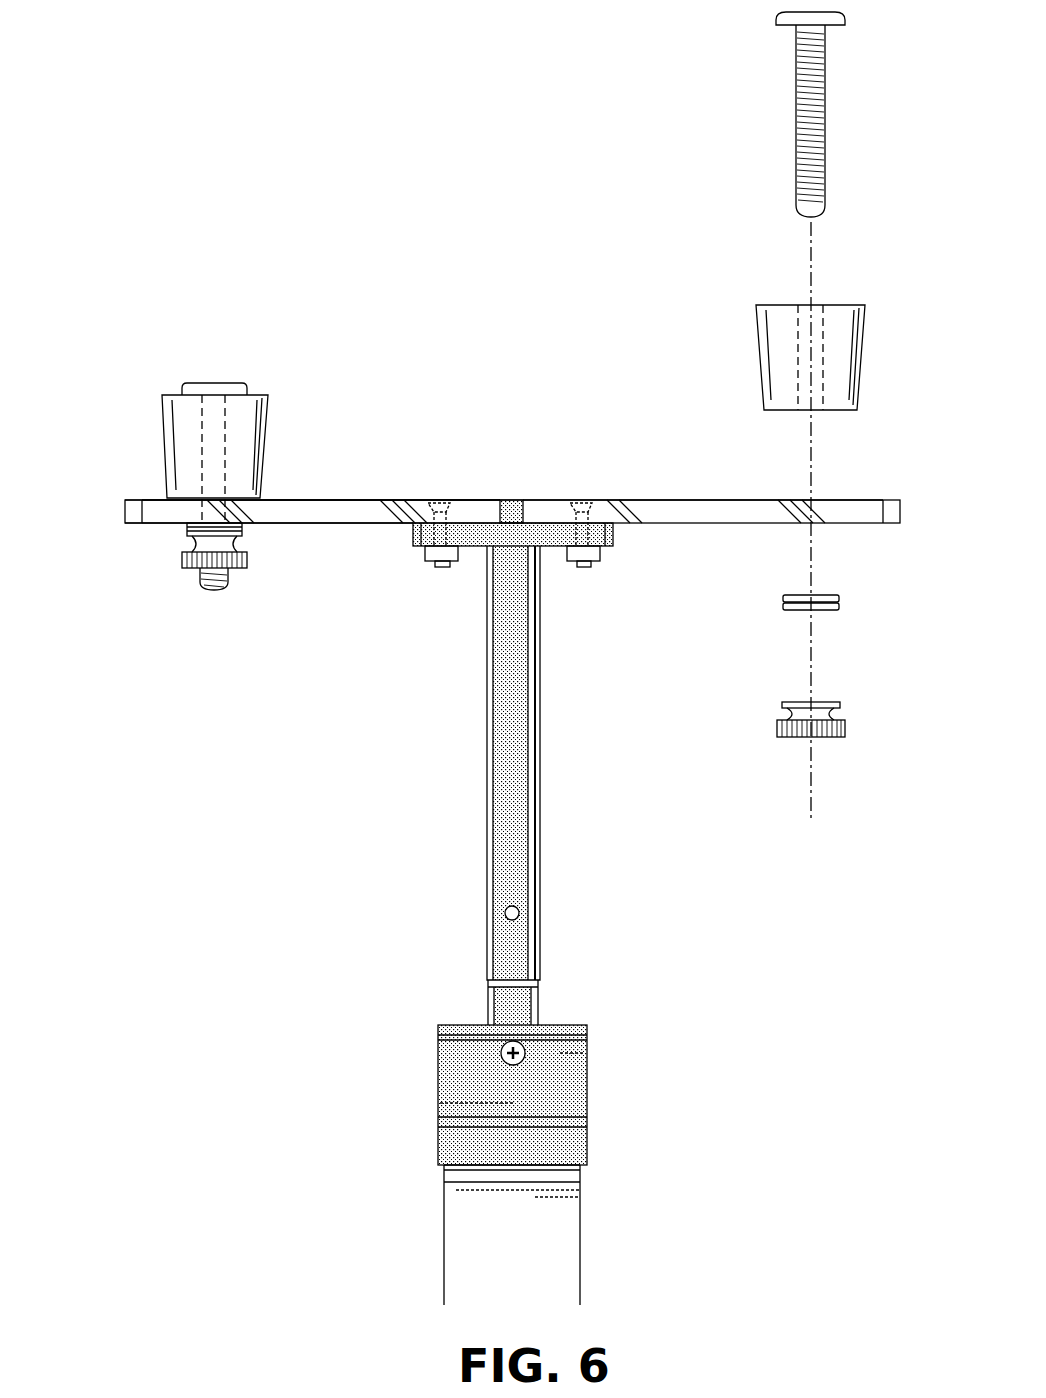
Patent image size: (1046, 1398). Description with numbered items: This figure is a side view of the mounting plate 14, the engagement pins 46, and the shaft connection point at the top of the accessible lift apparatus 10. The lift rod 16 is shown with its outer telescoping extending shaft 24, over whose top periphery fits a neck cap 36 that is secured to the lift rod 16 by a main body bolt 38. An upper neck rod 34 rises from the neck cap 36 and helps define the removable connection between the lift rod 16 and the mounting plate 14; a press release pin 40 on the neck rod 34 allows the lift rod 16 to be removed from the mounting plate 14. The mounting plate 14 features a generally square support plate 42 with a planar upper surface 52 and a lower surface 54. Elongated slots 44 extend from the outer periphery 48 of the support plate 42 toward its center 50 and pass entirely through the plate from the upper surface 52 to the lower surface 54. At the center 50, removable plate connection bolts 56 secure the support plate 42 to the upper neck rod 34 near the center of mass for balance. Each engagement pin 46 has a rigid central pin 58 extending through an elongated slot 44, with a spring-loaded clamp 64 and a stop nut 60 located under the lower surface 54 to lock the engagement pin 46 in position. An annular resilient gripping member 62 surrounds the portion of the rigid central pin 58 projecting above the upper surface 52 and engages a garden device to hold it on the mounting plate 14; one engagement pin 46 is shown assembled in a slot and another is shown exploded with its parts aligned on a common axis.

The accessible lift apparatus 10 is at (208, 80).
The mounting plate 14 is at (160, 276).
The lift rod 16 is at (440, 1230).
The outer telescoping extending shaft 24 is at (444, 1258).
The neck rod 34 is at (487, 830).
The neck cap 36 is at (438, 1080).
The main body bolt 38 is at (510, 1065).
The press release pin 40 is at (505, 913).
The support plate 42 is at (701, 498).
The elongated slot 44 is at (130, 518).
The engagement pin 46 is at (146, 355).
The outer periphery 48 is at (128, 508).
The center 50 is at (500, 500).
The upper surface 52 is at (360, 500).
The lower surface 54 is at (360, 524).
The plate connection bolt 56 is at (441, 569).
The rigid central pin 58 is at (212, 383).
The stop nut 60 is at (249, 560).
The annular resilient gripping member 62 is at (162, 447).
The spring-loaded clamp 64 is at (188, 530).